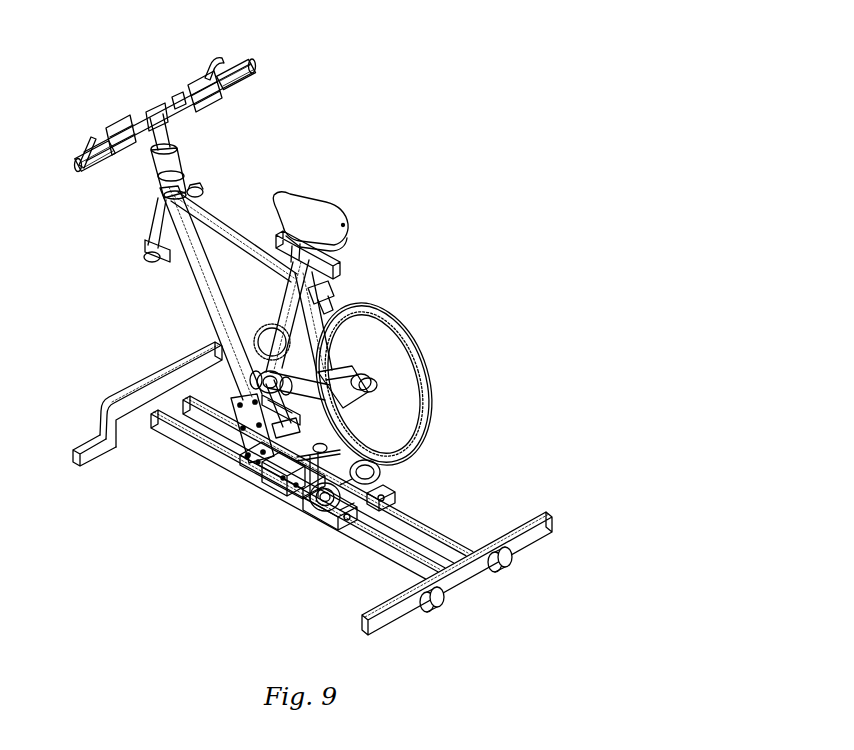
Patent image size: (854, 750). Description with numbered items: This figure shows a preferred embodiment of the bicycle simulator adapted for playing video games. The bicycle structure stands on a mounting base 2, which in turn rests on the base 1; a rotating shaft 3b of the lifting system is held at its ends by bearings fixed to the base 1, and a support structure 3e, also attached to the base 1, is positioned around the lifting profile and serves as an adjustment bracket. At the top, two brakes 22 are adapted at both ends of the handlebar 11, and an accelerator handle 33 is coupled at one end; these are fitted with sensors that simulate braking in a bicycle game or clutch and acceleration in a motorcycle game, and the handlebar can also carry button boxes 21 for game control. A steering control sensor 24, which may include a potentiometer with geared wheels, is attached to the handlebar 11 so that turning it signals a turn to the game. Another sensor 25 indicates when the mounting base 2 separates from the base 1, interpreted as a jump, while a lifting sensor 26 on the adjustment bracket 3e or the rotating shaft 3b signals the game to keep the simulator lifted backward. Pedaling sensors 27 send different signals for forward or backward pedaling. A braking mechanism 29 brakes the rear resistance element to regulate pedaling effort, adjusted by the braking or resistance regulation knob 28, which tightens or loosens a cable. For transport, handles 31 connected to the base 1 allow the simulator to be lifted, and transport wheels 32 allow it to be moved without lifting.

The base 1 is at (362, 550).
The mounting base 2 is at (243, 444).
The rotating shaft 3b is at (323, 512).
The support structure 3e is at (300, 490).
The handlebar 11 is at (157, 107).
The button boxes 21 is at (115, 127).
The brakes 22 is at (93, 143).
The steering control sensor 24 is at (193, 173).
The sensor 25 is at (240, 468).
The lifting sensor 26 is at (285, 497).
The pedaling sensors 27 is at (312, 372).
The braking or resistance regulation knob 28 is at (207, 192).
The braking mechanism 29 is at (327, 293).
The handles 31 is at (148, 370).
The transport wheels 32 is at (438, 608).
The accelerator handle 33 is at (240, 63).